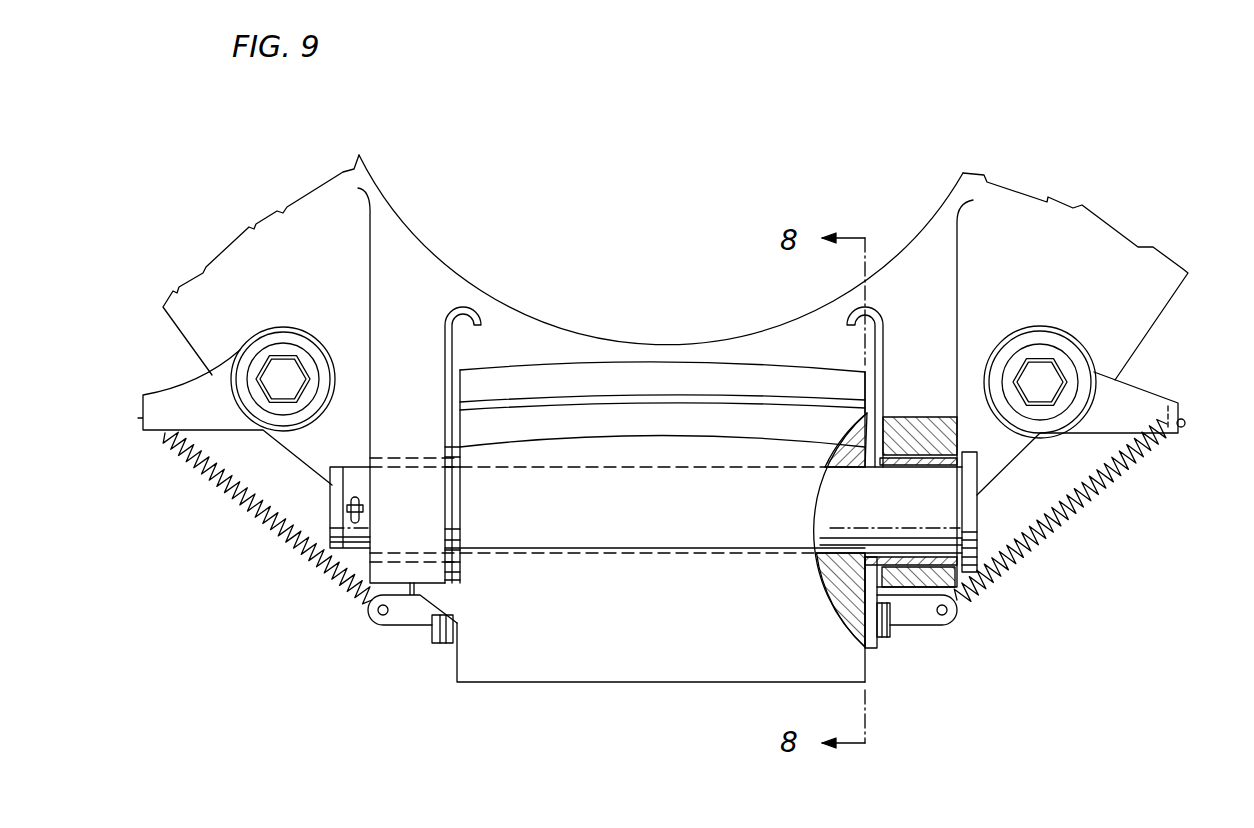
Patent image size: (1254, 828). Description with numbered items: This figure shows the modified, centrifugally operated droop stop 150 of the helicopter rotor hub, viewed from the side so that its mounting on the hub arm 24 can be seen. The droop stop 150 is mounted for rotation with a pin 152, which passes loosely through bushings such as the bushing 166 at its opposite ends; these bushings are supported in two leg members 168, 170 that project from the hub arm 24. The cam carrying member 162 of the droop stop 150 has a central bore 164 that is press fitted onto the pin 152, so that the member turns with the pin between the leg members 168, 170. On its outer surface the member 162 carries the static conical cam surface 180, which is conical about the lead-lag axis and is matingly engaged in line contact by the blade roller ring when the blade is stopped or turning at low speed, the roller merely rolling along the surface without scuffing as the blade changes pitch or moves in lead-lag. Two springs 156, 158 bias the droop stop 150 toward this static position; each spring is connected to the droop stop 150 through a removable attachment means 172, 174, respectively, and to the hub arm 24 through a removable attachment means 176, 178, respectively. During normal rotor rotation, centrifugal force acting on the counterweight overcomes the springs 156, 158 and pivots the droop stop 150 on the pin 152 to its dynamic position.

The hub arm 24 is at (1162, 260).
The droop stop 150 is at (876, 677).
The pin 152 is at (974, 512).
The spring 156 is at (273, 527).
The spring 158 is at (1077, 507).
The cam carrying member 162 is at (858, 425).
The central bore 164 is at (827, 580).
The bushing 166 is at (950, 440).
The leg member 168 is at (377, 293).
The leg member 170 is at (947, 272).
The removable attachment means 172 is at (408, 613).
The removable attachment means 174 is at (935, 620).
The removable attachment means 176 is at (163, 398).
The removable attachment means 178 is at (1142, 398).
The static conical cam surface 180 is at (770, 370).